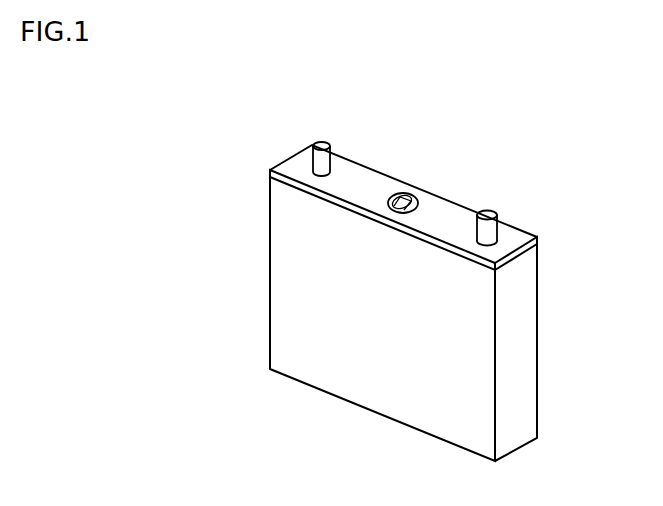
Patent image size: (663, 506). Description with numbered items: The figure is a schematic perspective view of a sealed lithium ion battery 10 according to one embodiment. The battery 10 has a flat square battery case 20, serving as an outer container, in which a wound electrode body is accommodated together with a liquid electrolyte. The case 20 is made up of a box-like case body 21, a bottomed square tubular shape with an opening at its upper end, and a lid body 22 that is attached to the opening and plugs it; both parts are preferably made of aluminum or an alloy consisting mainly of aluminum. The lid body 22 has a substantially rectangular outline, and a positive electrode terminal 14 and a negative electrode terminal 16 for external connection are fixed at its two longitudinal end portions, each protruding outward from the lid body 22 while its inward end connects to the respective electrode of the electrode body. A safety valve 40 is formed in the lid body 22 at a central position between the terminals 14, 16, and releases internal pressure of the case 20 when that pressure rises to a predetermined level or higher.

The lithium ion battery 10 is at (588, 136).
The positive electrode terminal 14 is at (489, 210).
The negative electrode terminal 16 is at (323, 142).
The battery case 20 is at (268, 323).
The case body 21 is at (523, 301).
The lid body 22 is at (518, 238).
The safety valve 40 is at (419, 204).